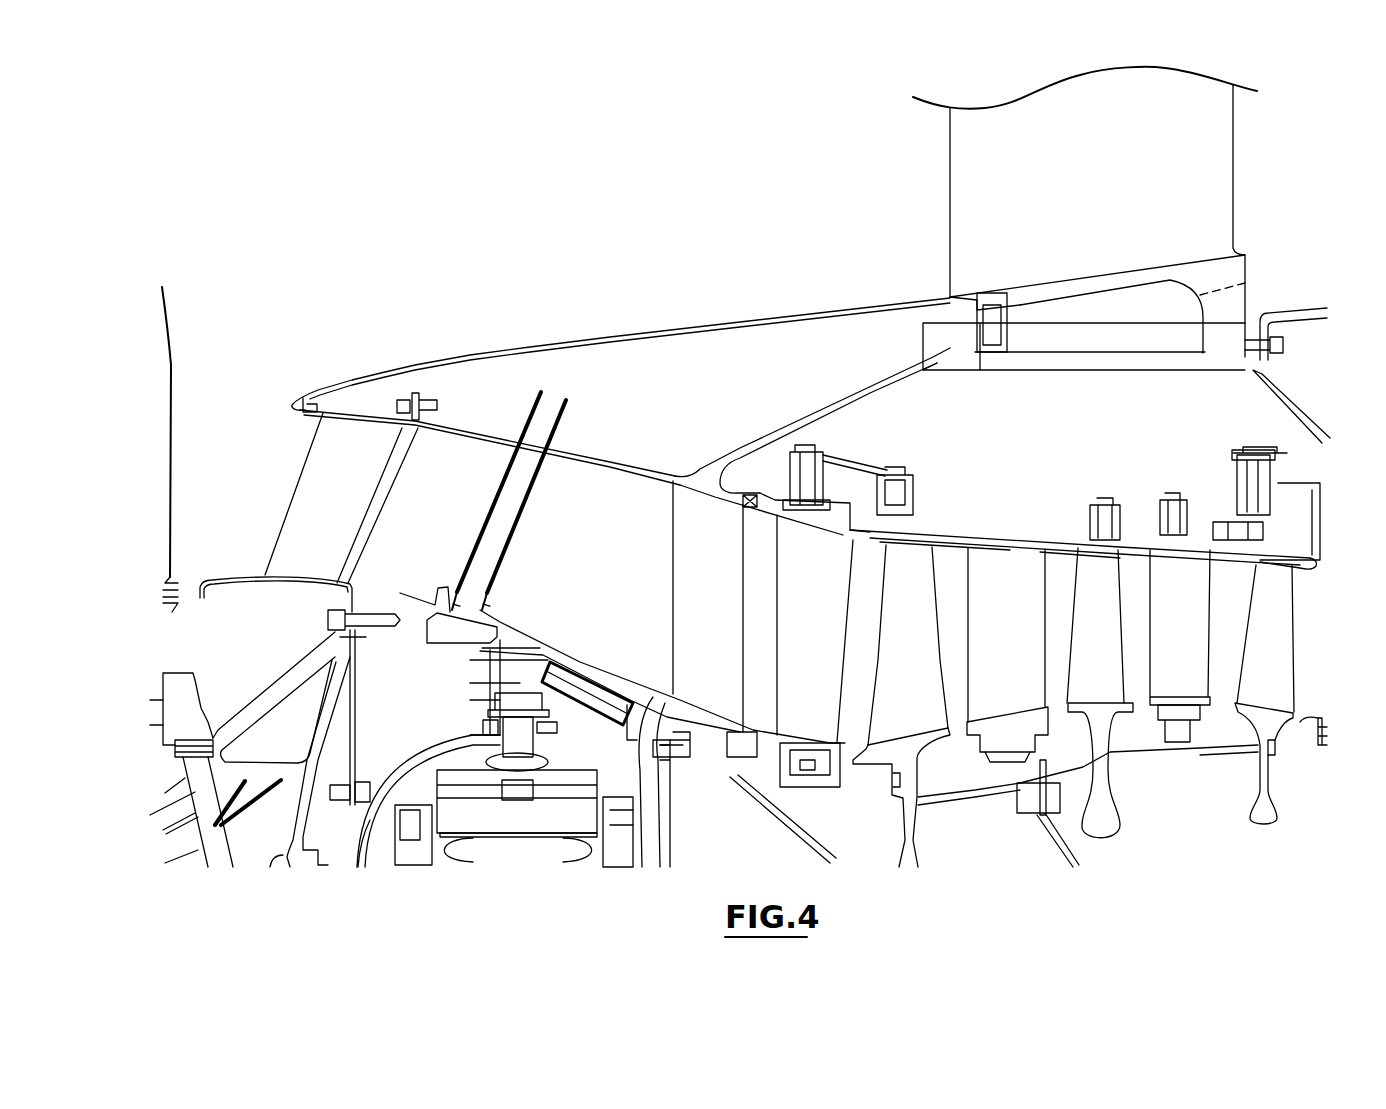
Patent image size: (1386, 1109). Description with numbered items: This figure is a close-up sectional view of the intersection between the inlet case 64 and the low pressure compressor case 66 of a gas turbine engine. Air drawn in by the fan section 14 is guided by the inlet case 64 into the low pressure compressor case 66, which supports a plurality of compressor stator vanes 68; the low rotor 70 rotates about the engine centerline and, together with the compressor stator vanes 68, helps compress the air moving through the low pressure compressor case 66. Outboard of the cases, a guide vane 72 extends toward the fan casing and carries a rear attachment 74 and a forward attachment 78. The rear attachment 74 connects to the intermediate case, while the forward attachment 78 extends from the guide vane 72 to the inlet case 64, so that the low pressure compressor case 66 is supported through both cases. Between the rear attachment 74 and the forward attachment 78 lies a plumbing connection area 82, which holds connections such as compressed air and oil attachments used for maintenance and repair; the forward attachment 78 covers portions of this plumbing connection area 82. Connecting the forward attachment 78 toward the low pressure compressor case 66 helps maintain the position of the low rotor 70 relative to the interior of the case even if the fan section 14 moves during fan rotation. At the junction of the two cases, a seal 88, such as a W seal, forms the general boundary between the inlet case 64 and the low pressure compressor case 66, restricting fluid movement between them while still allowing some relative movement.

The fan section 14 is at (158, 403).
The inlet case 64 is at (463, 431).
The low pressure compressor case 66 is at (1057, 543).
The compressor stator vanes 68 is at (1013, 690).
The low rotor 70 is at (1108, 683).
The guide vanes 72 is at (973, 175).
The rear attachment 74 is at (1293, 406).
The forward attachment 78 is at (818, 415).
The plumbing connection area 82 is at (591, 386).
The seal 88 is at (753, 496).